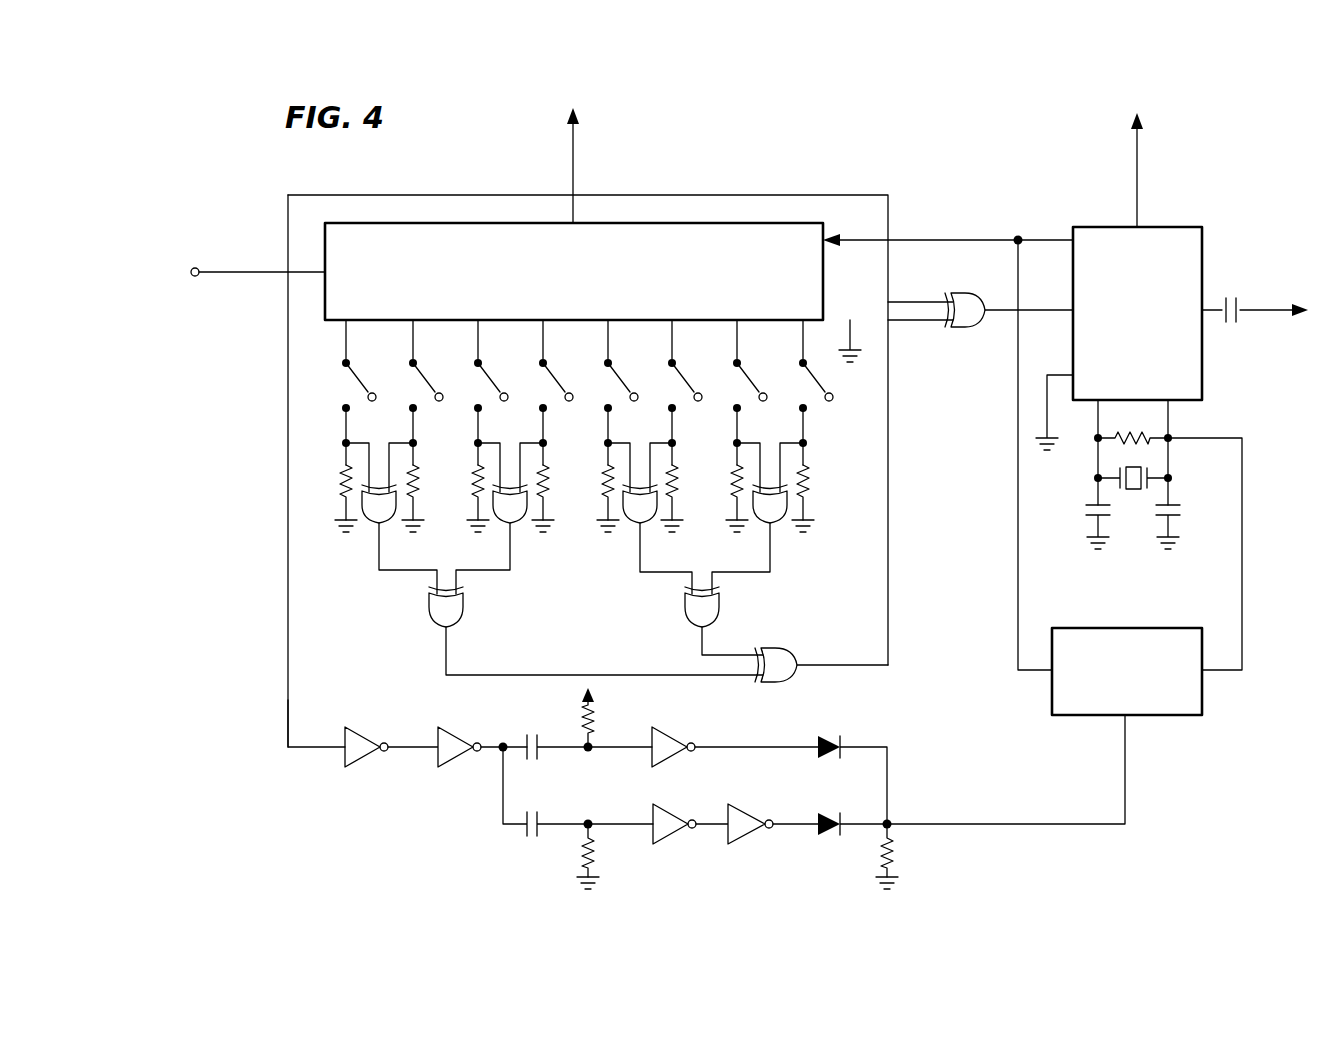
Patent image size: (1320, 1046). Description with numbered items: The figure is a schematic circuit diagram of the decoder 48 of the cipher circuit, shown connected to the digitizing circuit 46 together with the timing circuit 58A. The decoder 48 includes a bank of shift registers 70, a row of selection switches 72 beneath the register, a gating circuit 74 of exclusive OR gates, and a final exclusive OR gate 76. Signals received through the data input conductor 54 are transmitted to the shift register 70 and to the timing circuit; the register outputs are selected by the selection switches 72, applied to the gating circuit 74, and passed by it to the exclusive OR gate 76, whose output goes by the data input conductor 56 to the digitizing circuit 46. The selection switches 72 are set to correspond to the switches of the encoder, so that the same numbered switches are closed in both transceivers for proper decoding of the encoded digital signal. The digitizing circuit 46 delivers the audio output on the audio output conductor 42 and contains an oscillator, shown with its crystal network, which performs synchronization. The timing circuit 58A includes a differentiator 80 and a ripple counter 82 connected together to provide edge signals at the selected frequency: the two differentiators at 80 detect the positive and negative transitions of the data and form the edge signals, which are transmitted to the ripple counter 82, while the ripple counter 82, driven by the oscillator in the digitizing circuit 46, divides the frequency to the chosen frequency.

The audio output conductor 42 is at (1272, 318).
The digitizing circuit 46 is at (1192, 260).
The decoder 48 is at (270, 206).
The data input conductor 54 is at (514, 193).
The data input conductor 56 is at (970, 240).
The timing circuit 58A is at (328, 677).
The shift register 70 is at (806, 283).
The selection switches 72 is at (338, 396).
The gating circuit 74 is at (388, 603).
The exclusive OR gate 76 is at (988, 296).
The differentiator 80 is at (948, 777).
The ripple counter 82 is at (1100, 718).